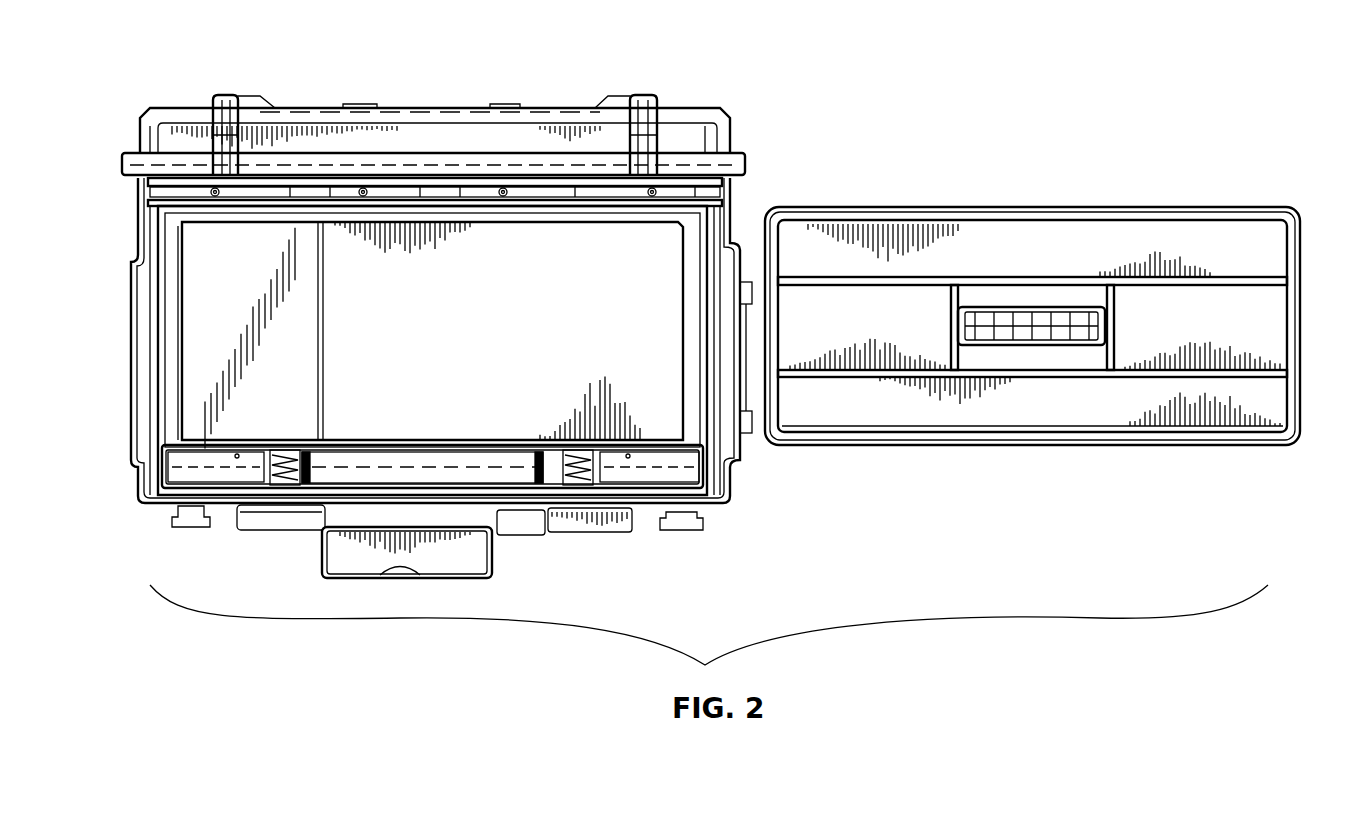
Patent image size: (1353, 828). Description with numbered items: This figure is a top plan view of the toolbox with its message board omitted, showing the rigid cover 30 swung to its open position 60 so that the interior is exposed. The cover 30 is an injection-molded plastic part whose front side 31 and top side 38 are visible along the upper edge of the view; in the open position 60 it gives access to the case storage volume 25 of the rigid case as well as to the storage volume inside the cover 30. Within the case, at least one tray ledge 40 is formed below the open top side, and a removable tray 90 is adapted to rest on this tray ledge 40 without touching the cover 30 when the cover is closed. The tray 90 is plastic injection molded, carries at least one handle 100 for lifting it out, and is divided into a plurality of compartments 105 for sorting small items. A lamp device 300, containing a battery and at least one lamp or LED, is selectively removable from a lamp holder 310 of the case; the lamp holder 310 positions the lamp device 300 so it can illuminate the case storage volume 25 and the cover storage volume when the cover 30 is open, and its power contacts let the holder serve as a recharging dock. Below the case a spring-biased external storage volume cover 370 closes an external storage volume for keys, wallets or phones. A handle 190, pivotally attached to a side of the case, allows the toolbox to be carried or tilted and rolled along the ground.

The rigid cover 30 is at (472, 110).
The front side 31 is at (428, 135).
The top side 38 is at (300, 108).
The tray ledge 40 is at (690, 232).
The open position 60 is at (444, 381).
The case storage volume 25 is at (350, 350).
The lamp device 300 is at (452, 472).
The lamp holder 310 is at (548, 482).
The external storage volume cover 370 is at (477, 550).
The removable tray 90 is at (1058, 294).
The compartments 105 is at (872, 305).
The handle 100 is at (1057, 308).
The handle 190 is at (763, 348).